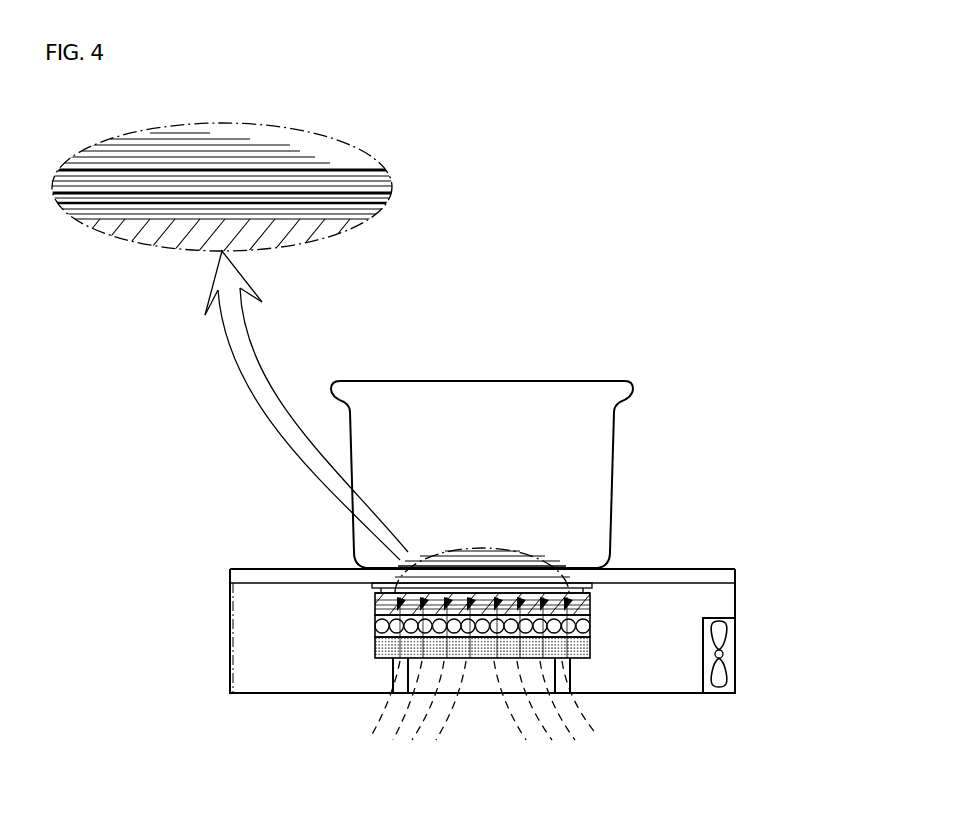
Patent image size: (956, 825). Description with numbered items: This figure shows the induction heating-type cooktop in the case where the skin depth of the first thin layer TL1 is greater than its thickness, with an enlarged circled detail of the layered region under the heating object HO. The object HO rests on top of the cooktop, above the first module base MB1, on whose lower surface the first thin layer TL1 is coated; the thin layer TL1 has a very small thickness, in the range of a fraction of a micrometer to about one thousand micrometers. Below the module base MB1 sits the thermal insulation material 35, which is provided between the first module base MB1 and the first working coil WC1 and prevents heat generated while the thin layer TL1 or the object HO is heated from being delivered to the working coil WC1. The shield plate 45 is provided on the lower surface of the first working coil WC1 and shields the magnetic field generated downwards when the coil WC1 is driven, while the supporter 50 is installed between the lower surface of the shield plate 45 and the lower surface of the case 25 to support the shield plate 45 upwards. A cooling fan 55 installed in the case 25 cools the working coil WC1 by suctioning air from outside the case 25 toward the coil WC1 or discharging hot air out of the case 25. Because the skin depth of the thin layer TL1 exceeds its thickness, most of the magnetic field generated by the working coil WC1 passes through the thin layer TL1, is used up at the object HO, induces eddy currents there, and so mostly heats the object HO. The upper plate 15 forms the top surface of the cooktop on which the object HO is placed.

The heating object HO is at (548, 390).
The upper plate 15 is at (720, 575).
The first module base MB1 is at (380, 585).
The first thin layer TL1 is at (368, 207).
The thermal insulation material 35 is at (592, 598).
The first working coil WC1 is at (592, 638).
The shield plate 45 is at (372, 657).
The supporter 50 is at (405, 683).
The case 25 is at (737, 602).
The cooling fan 55 is at (712, 692).